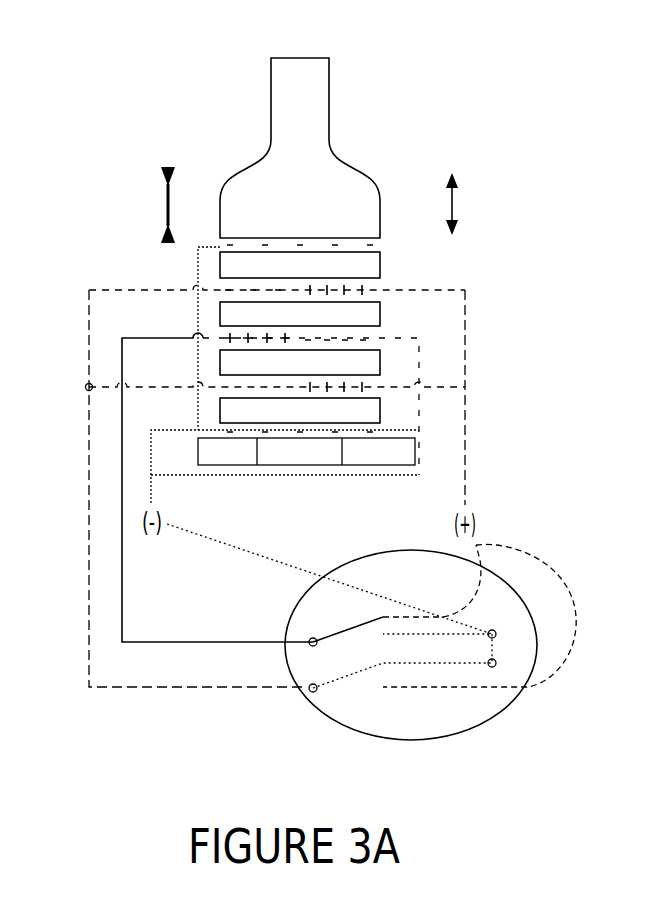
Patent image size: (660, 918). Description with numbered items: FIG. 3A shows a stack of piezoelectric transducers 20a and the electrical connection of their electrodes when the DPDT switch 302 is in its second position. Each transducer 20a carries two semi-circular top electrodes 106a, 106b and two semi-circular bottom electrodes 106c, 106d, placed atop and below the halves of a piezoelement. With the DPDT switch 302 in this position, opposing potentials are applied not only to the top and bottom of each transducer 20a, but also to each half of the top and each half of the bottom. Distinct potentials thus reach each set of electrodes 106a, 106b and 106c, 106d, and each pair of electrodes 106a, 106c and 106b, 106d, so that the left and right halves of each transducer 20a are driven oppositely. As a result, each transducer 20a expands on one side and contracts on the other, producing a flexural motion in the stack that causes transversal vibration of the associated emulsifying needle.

The transducer 20a is at (220, 317).
The top electrode 106a is at (248, 298).
The top electrode 106b is at (333, 300).
The bottom electrode 106c is at (238, 328).
The bottom electrode 106d is at (335, 330).
The DPDT switch 302 is at (315, 707).